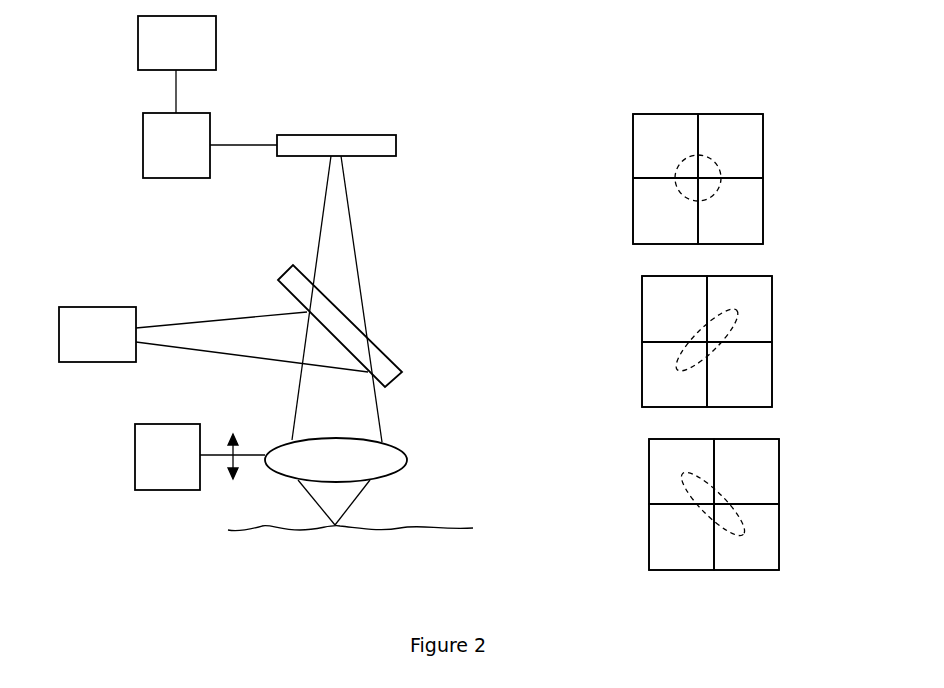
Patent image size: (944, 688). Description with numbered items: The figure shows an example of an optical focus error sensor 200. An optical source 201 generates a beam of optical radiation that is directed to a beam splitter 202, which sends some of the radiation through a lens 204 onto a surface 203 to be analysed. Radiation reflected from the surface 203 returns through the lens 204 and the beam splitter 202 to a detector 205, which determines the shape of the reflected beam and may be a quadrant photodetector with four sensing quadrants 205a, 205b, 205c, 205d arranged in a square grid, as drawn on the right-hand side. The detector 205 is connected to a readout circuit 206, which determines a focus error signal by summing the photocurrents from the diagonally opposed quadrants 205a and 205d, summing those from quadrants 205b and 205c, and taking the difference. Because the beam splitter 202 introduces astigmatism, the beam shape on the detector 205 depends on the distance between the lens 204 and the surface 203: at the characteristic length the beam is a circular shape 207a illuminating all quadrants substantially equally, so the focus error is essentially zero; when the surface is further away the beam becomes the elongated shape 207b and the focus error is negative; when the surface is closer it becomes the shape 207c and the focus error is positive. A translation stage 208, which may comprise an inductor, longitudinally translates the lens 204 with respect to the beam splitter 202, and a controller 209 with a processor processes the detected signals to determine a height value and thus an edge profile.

The optical focus error sensor 200 is at (96, 237).
The optical source 201 is at (75, 340).
The beam splitter 202 is at (288, 268).
The surface 203 is at (412, 523).
The lens 204 is at (395, 453).
The detector 205 is at (365, 132).
The sensing quadrant 205a is at (687, 149).
The sensing quadrant 205b is at (754, 149).
The sensing quadrant 205c is at (687, 237).
The sensing quadrant 205d is at (754, 237).
The readout circuit 206 is at (158, 156).
The circular shape 207a is at (730, 173).
The shape 207b is at (740, 317).
The shape 207c is at (740, 517).
The translation stage 208 is at (146, 470).
The controller 209 is at (154, 49).